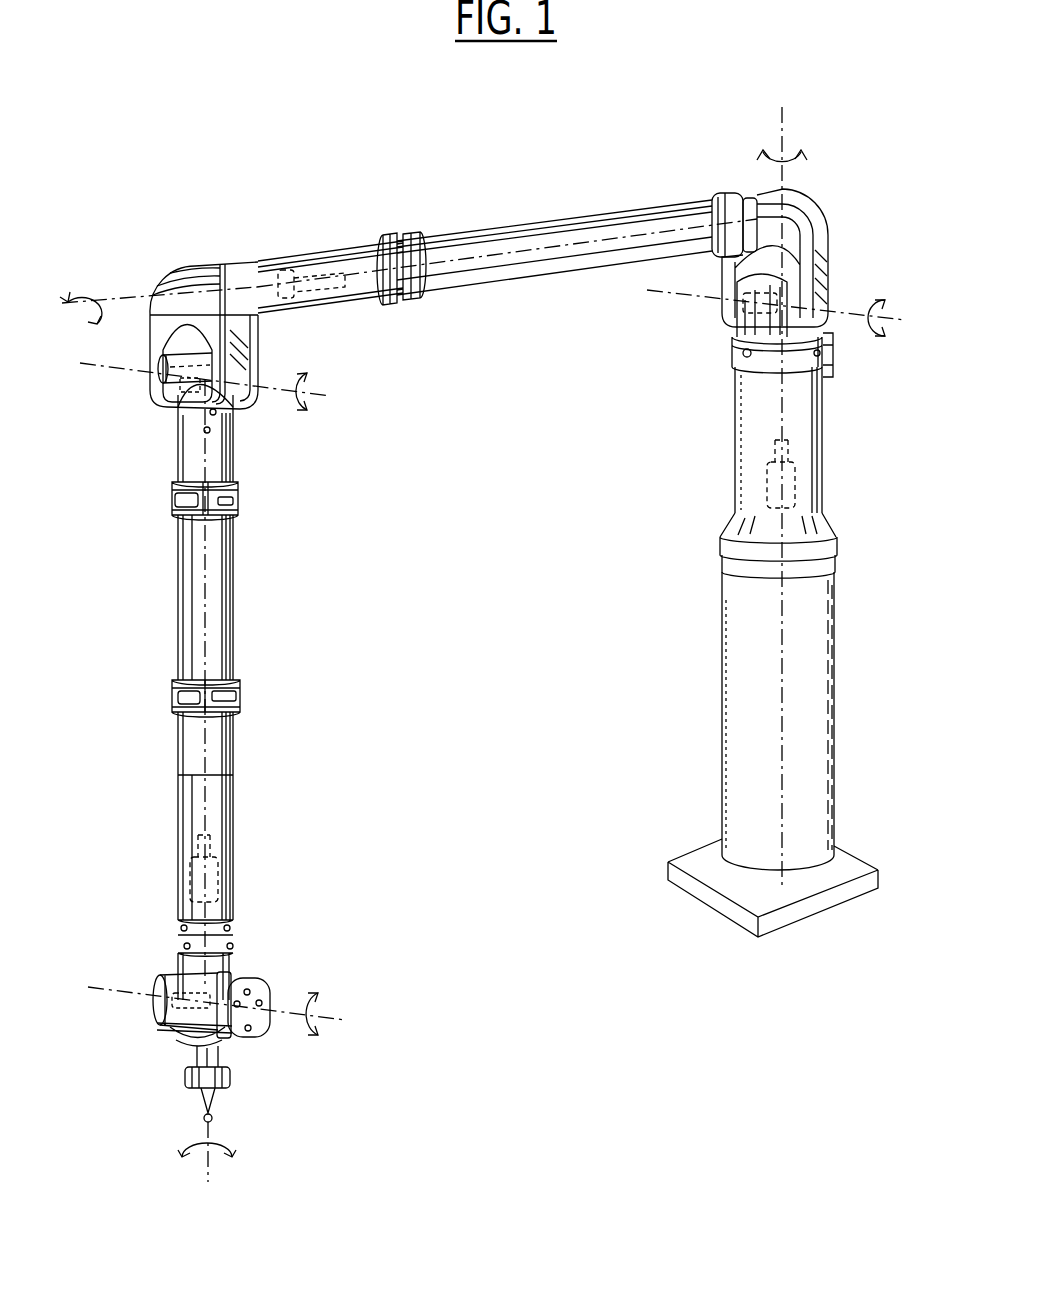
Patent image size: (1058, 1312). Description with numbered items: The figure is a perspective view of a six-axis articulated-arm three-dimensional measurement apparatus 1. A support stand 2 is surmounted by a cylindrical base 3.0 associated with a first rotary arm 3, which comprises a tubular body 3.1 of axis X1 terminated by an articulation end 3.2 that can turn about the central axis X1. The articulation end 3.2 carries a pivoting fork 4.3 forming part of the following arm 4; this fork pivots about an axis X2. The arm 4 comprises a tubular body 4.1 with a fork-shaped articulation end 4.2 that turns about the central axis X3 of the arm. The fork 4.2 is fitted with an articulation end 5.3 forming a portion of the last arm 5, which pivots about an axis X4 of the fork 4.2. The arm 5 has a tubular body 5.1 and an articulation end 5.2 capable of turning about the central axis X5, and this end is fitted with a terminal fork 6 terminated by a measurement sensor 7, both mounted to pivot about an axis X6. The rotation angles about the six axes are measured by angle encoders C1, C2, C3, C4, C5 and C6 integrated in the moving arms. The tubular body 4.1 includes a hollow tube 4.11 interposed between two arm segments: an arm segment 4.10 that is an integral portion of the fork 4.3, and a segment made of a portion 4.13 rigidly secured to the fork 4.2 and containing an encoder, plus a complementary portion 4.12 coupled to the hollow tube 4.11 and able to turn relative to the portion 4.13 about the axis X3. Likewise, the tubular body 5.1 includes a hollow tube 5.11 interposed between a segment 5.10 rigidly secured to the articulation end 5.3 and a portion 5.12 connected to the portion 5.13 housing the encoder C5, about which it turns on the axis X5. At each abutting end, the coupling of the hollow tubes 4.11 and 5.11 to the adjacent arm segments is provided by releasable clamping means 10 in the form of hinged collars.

The articulated-arm three-dimensional measurement apparatus 1 is at (912, 474).
The support stand 2 is at (847, 867).
The first rotary arm 3 is at (833, 492).
The cylindrical base 3.0 is at (810, 707).
The tubular body 3.1 is at (803, 398).
The articulation end 3.2 is at (740, 287).
The articulated arm 4 is at (489, 222).
The tubular body 4.1 is at (581, 218).
The articulation end 4.2 is at (183, 277).
The pivoting fork 4.3 is at (820, 227).
The arm segment 4.10 is at (782, 197).
The hollow tube 4.11 is at (562, 262).
The complementary portion 4.12 is at (372, 250).
The portion 4.13 is at (325, 263).
The articulated arm 5 is at (166, 747).
The tubular body 5.1 is at (173, 641).
The articulation end 5.2 is at (233, 982).
The articulation end 5.3 is at (157, 367).
The segment 5.10 is at (220, 453).
The hollow tube 5.11 is at (220, 588).
The portion 5.12 is at (220, 743).
The portion 5.13 is at (246, 876).
The terminal fork 6 is at (213, 1057).
The measurement sensor 7 is at (213, 1118).
The releasable clamping means 10 is at (400, 237).
The angle encoder C1 is at (767, 485).
The angle encoder C2 is at (745, 318).
The angle encoder C3 is at (310, 287).
The angle encoder C4 is at (157, 395).
The angle encoder C5 is at (215, 882).
The angle encoder C6 is at (175, 997).
The central axis X1 is at (783, 133).
The axis X2 is at (840, 313).
The central axis X3 is at (118, 297).
The axis X4 is at (323, 393).
The central axis X5 is at (207, 1157).
The axis X6 is at (340, 1013).